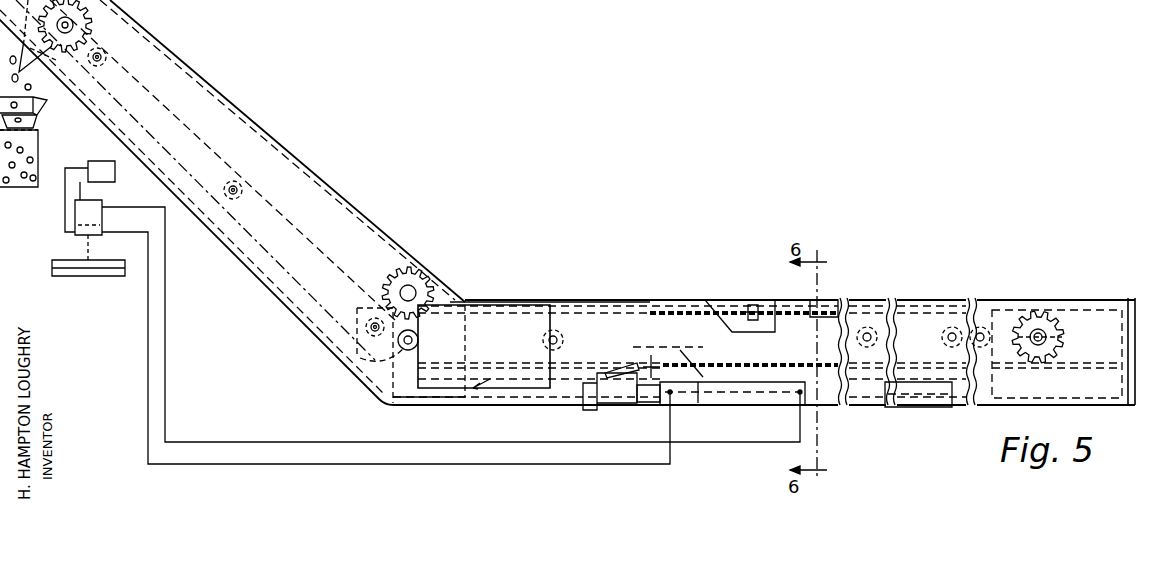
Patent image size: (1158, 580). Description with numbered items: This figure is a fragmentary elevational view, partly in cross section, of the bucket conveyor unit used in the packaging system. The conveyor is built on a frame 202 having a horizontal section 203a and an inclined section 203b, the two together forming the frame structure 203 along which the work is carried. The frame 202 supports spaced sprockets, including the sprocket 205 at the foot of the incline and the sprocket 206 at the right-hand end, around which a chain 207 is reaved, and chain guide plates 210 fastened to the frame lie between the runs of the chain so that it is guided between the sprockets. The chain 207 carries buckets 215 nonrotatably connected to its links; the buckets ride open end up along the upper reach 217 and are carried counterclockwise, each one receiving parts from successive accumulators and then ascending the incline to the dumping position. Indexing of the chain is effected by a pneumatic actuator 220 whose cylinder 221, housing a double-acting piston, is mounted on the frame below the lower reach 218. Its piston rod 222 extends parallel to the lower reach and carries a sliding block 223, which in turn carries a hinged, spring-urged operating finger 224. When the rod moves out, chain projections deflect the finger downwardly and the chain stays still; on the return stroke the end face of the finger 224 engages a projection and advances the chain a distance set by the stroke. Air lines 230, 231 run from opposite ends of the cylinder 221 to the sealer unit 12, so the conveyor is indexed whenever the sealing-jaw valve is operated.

The sealer unit 12 is at (118, 284).
The frame 202 is at (830, 412).
The conveyor 203 is at (1028, 293).
The horizontal section 203a is at (945, 300).
The inclined section 203b is at (185, 70).
The sprocket 205 is at (418, 266).
The sprocket 206 is at (1060, 320).
The chain 207 is at (810, 300).
The chain guide plates 210 is at (300, 268).
The bucket 215 is at (737, 300).
The upper reach 217 is at (660, 312).
The lower reach 218 is at (720, 362).
The actuator 220 is at (770, 408).
The cylinder 221 is at (698, 403).
The piston rod 222 is at (660, 403).
The sliding block 223 is at (612, 393).
The operating finger 224 is at (623, 365).
The air line 230 is at (295, 441).
The air line 231 is at (358, 464).